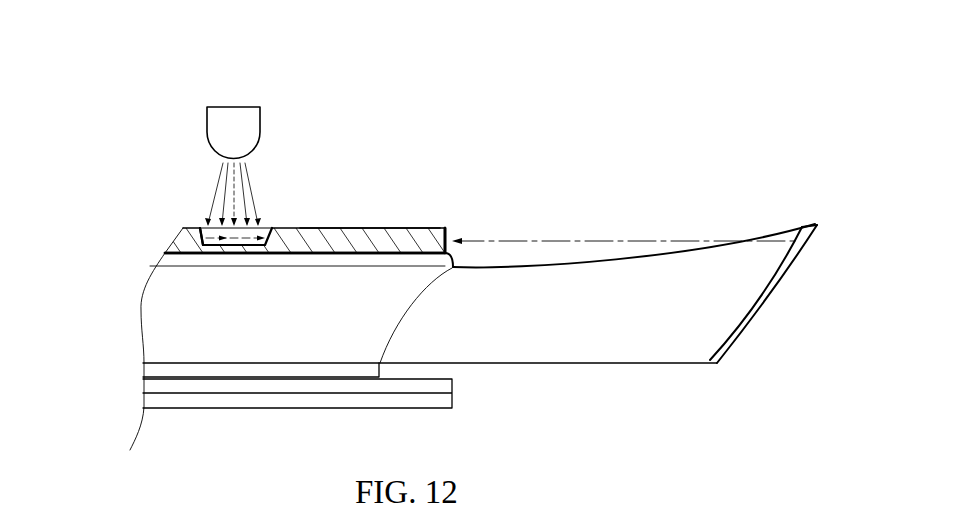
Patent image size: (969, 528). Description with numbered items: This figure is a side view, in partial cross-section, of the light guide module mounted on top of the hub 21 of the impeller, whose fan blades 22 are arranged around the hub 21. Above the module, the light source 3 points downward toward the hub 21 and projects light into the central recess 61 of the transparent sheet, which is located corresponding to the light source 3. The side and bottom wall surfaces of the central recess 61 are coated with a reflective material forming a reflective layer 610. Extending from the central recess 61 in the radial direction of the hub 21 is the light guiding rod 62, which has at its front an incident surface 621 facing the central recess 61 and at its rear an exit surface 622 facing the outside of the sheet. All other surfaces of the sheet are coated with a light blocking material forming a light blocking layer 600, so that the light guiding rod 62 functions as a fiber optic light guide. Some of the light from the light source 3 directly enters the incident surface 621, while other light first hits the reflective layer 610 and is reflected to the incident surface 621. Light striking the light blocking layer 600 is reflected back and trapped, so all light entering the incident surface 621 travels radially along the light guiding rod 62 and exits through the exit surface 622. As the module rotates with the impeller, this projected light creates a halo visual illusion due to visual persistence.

The light source 3 is at (253, 122).
The hub 21 is at (160, 328).
The fan blades 22 is at (623, 335).
The central recess 61 is at (193, 238).
The reflective layer 610 is at (207, 225).
The light guiding rod 62 is at (360, 228).
The light blocking layer 600 is at (398, 228).
The incident surface 621 is at (268, 226).
The exit surface 622 is at (447, 229).